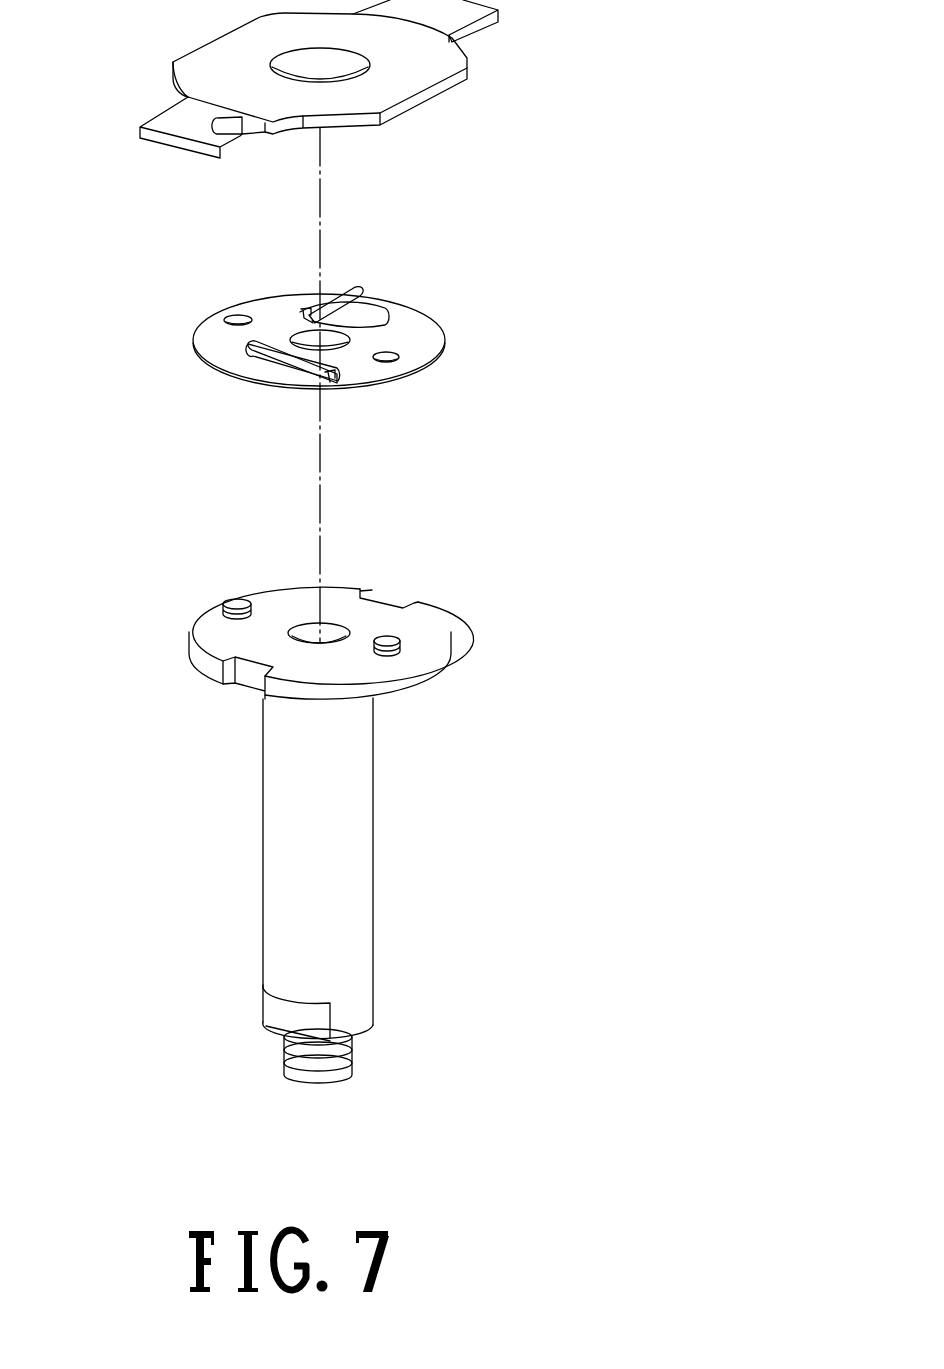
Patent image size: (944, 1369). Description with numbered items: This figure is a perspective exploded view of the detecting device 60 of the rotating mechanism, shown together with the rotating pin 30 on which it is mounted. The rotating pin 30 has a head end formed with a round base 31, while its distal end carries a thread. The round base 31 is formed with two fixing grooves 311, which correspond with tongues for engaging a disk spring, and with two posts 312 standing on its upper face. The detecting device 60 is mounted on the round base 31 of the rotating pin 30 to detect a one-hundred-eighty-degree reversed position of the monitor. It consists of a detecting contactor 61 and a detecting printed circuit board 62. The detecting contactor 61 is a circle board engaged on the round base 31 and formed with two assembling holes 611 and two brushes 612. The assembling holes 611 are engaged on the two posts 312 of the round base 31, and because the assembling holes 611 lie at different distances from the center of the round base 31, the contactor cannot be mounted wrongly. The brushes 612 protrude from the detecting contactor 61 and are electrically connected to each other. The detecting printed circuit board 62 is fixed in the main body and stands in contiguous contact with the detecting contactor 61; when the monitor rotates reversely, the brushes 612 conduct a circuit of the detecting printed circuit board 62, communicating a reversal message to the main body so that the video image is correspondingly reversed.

The rotating pin 30 is at (463, 652).
The round base 31 is at (427, 623).
The fixing grooves 311 is at (383, 600).
The posts 312 is at (236, 601).
The detecting device 60 is at (682, 83).
The detecting contactor 61 is at (460, 318).
The assembling holes 611 is at (234, 318).
The brushes 612 is at (360, 293).
The detecting printed circuit board 62 is at (470, 17).